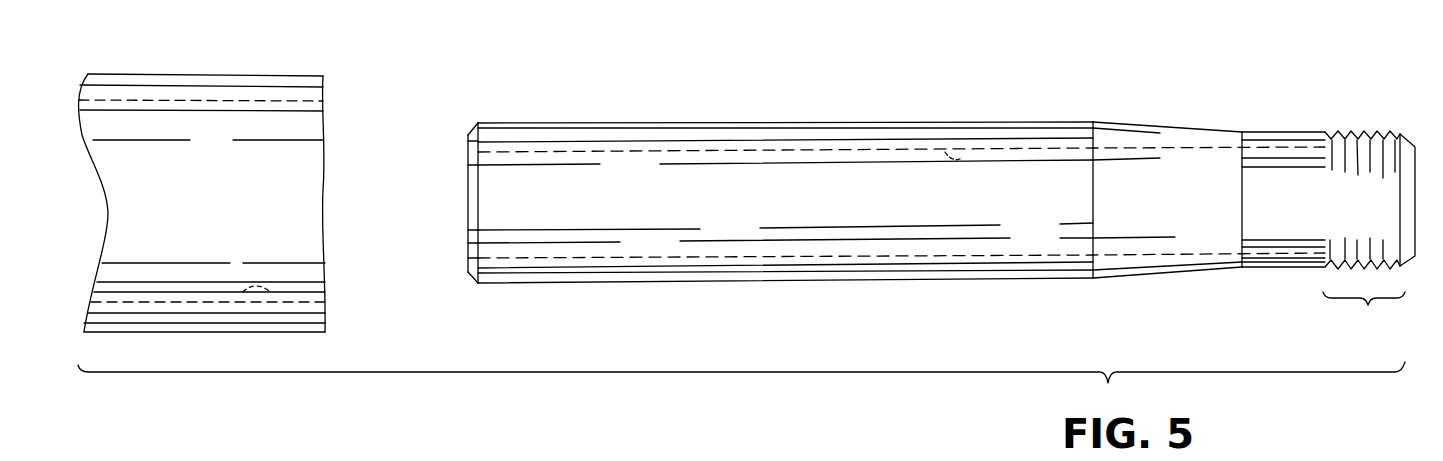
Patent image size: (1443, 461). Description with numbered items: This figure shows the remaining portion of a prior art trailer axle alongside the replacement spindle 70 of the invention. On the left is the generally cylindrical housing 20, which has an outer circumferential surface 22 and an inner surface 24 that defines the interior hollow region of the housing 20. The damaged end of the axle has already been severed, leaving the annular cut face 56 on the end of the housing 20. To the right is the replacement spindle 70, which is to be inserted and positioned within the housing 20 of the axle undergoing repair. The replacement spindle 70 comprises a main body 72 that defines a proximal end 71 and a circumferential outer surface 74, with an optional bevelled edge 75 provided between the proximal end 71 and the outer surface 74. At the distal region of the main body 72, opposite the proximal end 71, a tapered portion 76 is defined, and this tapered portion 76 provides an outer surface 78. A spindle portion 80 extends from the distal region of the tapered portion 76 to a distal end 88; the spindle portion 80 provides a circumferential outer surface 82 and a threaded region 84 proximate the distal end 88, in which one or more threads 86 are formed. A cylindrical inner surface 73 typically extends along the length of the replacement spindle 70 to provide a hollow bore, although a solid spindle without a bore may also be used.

The housing 20 is at (268, 67).
The outer circumferential surface 22 is at (181, 123).
The inner surface 24 is at (235, 313).
The cut face 56 is at (323, 135).
The replacement spindle 70 is at (835, 83).
The proximal end 71 is at (466, 203).
The main body 72 is at (590, 172).
The cylindrical inner surface 73 is at (975, 150).
The circumferential outer surface 74 is at (697, 170).
The bevelled edge 75 is at (470, 130).
The tapered portion 76 is at (1127, 135).
The outer surface 78 is at (1192, 135).
The spindle portion 80 is at (1290, 240).
The circumferential outer surface 82 is at (1250, 247).
The threaded region 84 is at (1364, 318).
The threads 86 is at (1357, 132).
The distal end 88 is at (1414, 150).